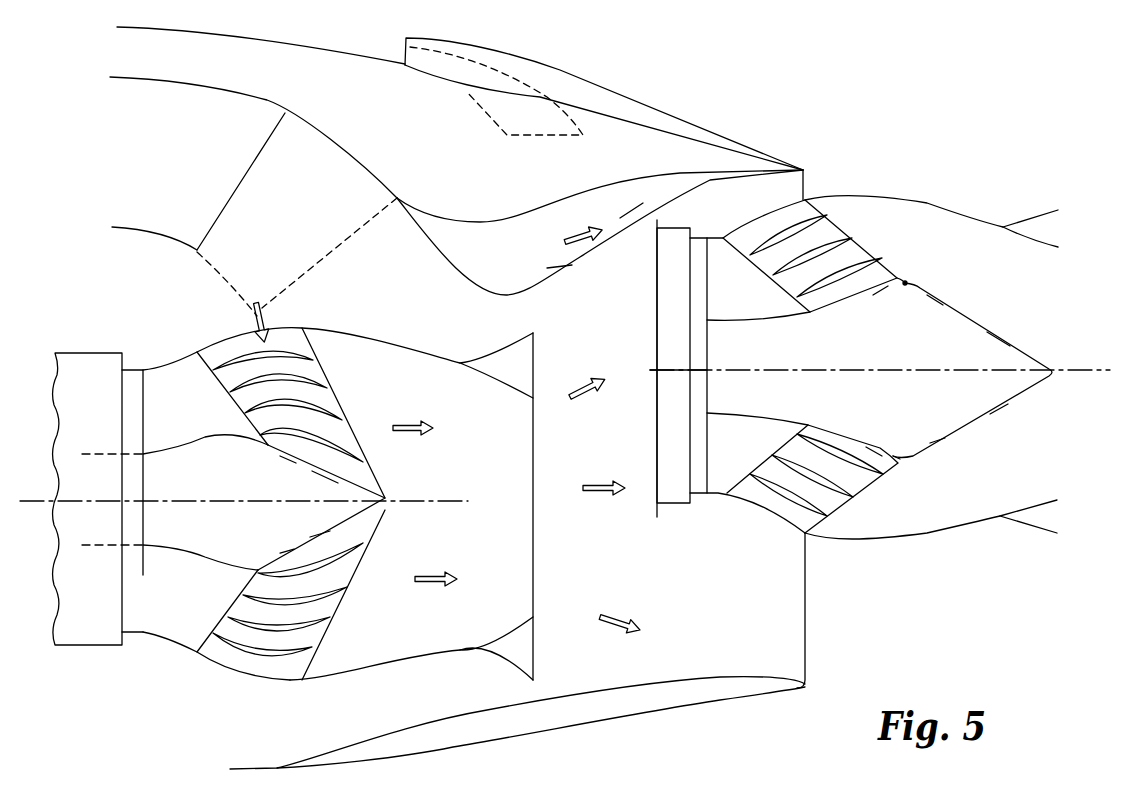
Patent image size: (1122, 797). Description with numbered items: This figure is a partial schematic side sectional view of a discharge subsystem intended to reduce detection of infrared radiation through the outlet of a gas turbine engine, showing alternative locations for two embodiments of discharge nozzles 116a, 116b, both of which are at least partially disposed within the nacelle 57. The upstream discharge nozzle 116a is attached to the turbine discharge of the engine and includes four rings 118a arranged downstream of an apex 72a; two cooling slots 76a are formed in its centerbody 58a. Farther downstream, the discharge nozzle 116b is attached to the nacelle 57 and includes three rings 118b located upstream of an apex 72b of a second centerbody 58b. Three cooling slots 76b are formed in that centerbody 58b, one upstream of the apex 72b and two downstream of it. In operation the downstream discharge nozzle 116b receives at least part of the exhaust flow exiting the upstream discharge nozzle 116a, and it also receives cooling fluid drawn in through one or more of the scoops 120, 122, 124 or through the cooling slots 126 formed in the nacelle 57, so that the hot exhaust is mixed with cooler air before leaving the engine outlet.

The nacelle 57 is at (686, 95).
The centerbody 58a is at (218, 528).
The centerbody 58b is at (1017, 385).
The apex 72a is at (227, 435).
The apex 72b is at (905, 283).
The cooling slots 76a is at (345, 478).
The cooling slots 76b is at (955, 444).
The discharge nozzle 116a is at (206, 675).
The discharge nozzle 116b is at (953, 547).
The rings 118a is at (365, 641).
The rings 118b is at (900, 236).
The scoop 120 is at (247, 738).
The scoop 122 is at (153, 148).
The scoop 124 is at (409, 66).
The cooling slots 126 is at (540, 241).